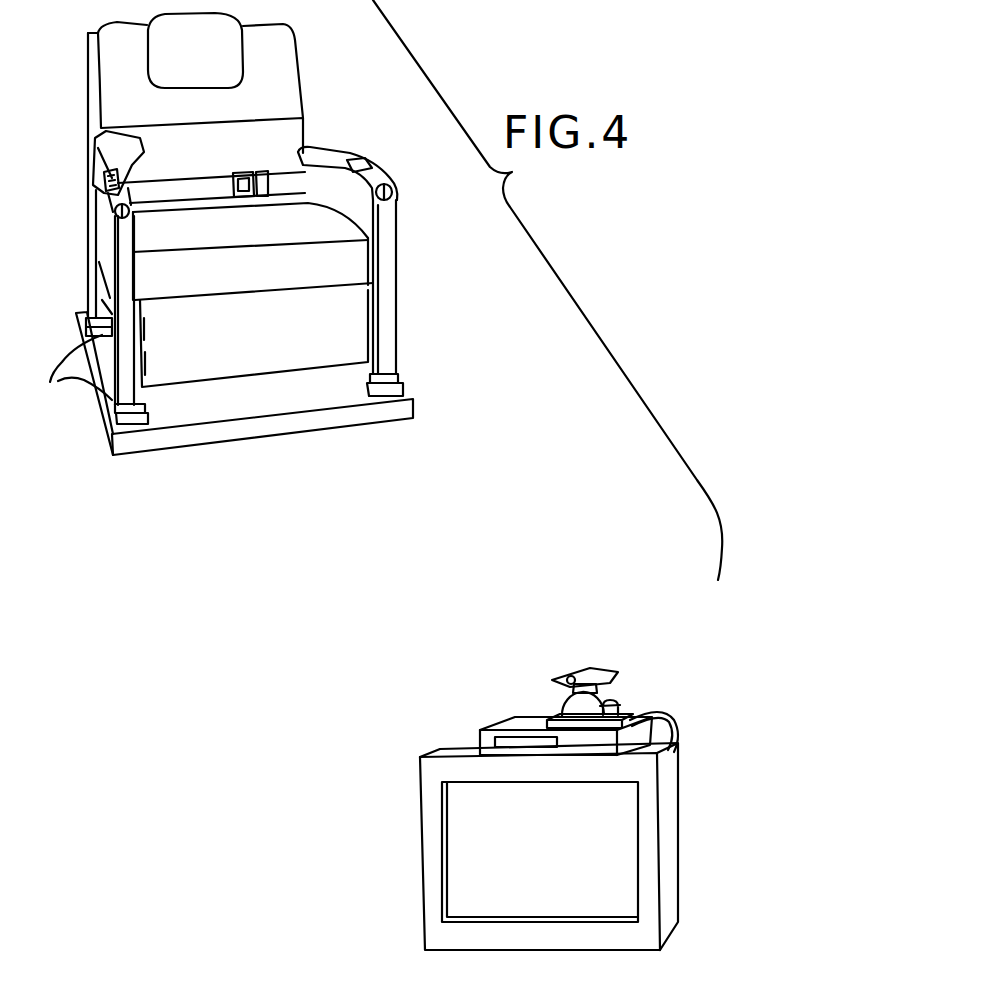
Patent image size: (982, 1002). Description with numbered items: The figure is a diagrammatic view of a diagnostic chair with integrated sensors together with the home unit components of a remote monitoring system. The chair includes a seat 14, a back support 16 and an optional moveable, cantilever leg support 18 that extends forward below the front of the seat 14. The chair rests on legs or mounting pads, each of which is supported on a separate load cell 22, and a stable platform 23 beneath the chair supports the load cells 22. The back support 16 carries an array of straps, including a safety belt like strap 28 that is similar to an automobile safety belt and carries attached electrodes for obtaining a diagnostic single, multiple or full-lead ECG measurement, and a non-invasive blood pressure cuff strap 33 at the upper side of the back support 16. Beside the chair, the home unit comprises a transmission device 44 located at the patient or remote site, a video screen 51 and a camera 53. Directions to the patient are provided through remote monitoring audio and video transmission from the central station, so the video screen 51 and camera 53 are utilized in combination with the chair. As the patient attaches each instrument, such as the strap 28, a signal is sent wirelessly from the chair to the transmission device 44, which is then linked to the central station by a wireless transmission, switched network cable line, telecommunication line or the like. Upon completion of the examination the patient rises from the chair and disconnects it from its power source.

The seat 14 is at (305, 228).
The back support 16 is at (212, 79).
The cantilever leg support 18 is at (345, 341).
The load cell 22 is at (68, 378).
The platform 23 is at (337, 417).
The safety belt like strap 28 is at (210, 183).
The non-invasive blood pressure cuff strap 33 is at (106, 131).
The transmission device 44 is at (478, 724).
The video screen 51 is at (468, 866).
The camera 53 is at (572, 666).